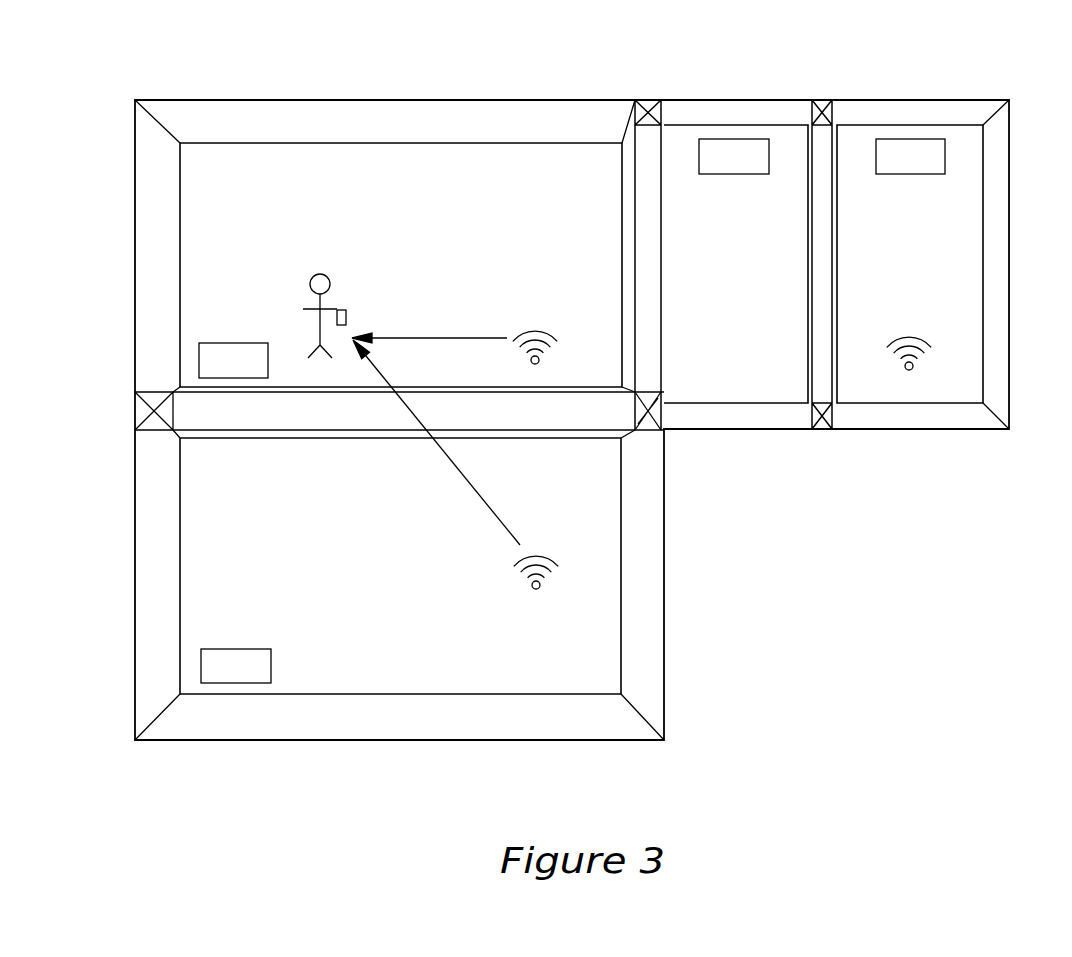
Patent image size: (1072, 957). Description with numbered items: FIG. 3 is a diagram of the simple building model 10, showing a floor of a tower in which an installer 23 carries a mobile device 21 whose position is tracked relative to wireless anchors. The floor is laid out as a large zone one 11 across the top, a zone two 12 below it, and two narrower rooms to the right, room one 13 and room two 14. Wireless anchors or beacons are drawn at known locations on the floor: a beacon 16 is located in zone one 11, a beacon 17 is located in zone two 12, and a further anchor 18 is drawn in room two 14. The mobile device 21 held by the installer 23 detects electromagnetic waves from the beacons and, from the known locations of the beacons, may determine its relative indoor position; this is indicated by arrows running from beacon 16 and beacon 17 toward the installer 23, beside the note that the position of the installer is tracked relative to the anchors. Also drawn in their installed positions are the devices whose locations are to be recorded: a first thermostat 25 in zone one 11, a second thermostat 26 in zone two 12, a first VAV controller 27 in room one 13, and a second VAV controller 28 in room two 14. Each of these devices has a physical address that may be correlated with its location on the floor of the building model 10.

The building model 10 is at (997, 79).
The zone one 11 is at (392, 118).
The zone two 12 is at (400, 723).
The room one 13 is at (727, 420).
The room two 14 is at (915, 420).
The wireless anchor or beacon 16 is at (533, 328).
The wireless anchor or beacon 17 is at (535, 553).
The wireless anchor 18 is at (907, 333).
The mobile device 21 is at (346, 316).
The installer 23 is at (313, 277).
The first thermostat 25 is at (233, 343).
The second thermostat 26 is at (237, 649).
The first VAV controller 27 is at (733, 174).
The second VAV controller 28 is at (908, 174).